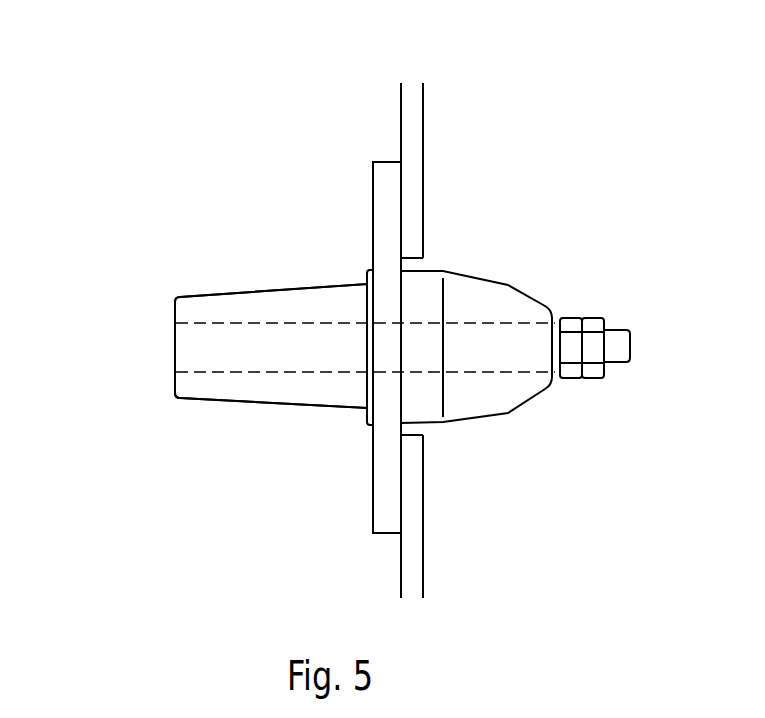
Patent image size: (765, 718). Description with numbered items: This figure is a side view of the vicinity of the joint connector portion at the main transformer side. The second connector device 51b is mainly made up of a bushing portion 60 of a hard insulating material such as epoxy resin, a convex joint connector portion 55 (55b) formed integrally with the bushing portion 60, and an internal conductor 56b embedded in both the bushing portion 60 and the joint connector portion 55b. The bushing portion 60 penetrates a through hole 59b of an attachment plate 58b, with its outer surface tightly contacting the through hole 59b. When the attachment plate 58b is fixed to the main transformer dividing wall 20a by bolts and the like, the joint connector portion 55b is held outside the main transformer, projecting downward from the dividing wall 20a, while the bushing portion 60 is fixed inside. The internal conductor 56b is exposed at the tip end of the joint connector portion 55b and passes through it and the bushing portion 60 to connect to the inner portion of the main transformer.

The main transformer dividing wall 20a is at (424, 150).
The attachment plate 58b is at (372, 195).
The through hole 59b is at (371, 423).
The joint connector portion 55 is at (215, 297).
The joint connector portion 55b is at (271, 346).
The internal conductor 56b is at (243, 370).
The bushing portion 60 is at (510, 282).
The second connector device 51b is at (136, 369).